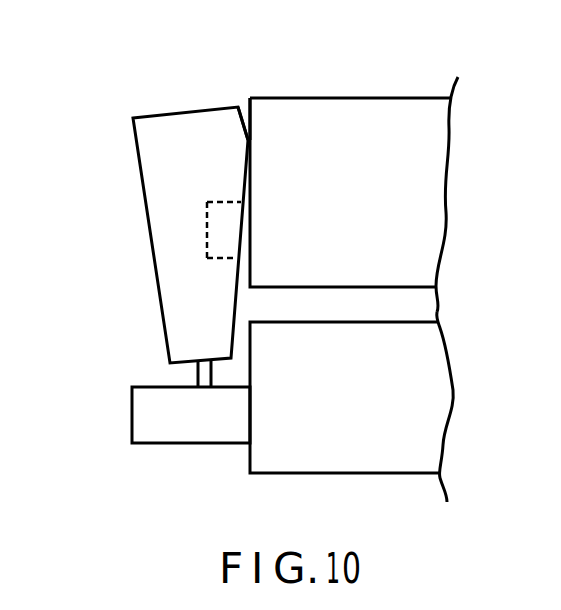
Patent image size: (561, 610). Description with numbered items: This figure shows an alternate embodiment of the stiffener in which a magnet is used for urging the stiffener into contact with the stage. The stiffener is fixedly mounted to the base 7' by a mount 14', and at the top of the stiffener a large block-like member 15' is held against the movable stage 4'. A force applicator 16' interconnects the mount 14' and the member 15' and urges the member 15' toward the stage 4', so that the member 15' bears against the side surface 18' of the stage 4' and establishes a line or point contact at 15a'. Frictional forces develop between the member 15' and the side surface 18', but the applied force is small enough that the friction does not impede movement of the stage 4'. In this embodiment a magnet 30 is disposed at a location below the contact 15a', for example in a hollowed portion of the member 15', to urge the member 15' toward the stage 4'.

The movable stage 4' is at (378, 194).
The base 7' is at (381, 407).
The mount 14' is at (146, 415).
The block-like member 15' is at (150, 235).
The line or point contact 15a' is at (205, 148).
The force applicator 16' is at (153, 357).
The side surface 18' is at (234, 82).
The recess 30 is at (212, 258).